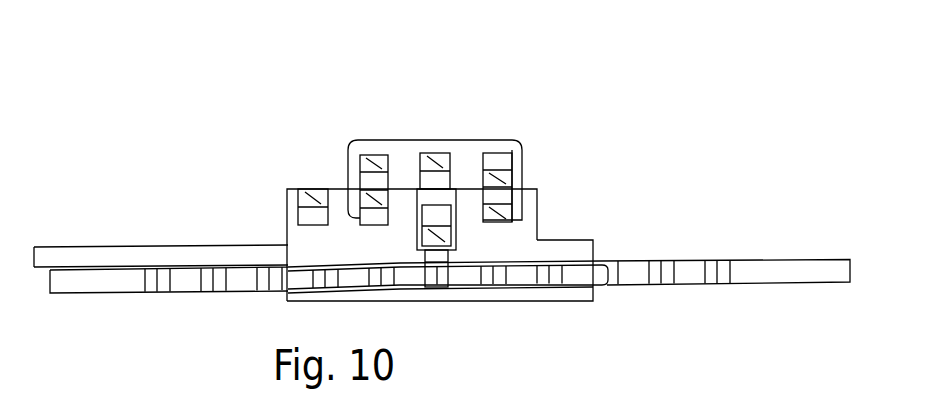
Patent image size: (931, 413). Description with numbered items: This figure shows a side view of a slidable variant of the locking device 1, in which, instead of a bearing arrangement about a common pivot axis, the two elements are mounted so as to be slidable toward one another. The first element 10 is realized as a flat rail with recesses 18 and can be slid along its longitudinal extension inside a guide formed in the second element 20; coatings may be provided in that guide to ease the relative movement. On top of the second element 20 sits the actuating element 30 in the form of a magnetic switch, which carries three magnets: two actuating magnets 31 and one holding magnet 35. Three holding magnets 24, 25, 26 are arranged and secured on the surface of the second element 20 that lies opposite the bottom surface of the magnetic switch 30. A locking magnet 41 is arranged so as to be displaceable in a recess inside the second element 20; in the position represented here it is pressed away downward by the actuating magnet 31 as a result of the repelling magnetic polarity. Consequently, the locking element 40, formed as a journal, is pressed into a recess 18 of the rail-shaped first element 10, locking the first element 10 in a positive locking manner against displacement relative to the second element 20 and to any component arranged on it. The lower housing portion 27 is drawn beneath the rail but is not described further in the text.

The locking device 1 is at (376, 82).
The first element 10 is at (748, 267).
The recesses 18 is at (152, 288).
The second element 20 is at (298, 237).
The holding magnet 24 is at (514, 203).
The holding magnet 25 is at (360, 212).
The holding magnet 26 is at (305, 188).
The lower housing 27 is at (560, 293).
The actuating element 30 is at (483, 140).
The actuating magnets 31 is at (424, 151).
The holding magnet 35 is at (353, 143).
The locking element 40 is at (447, 256).
The locking magnet 41 is at (447, 216).